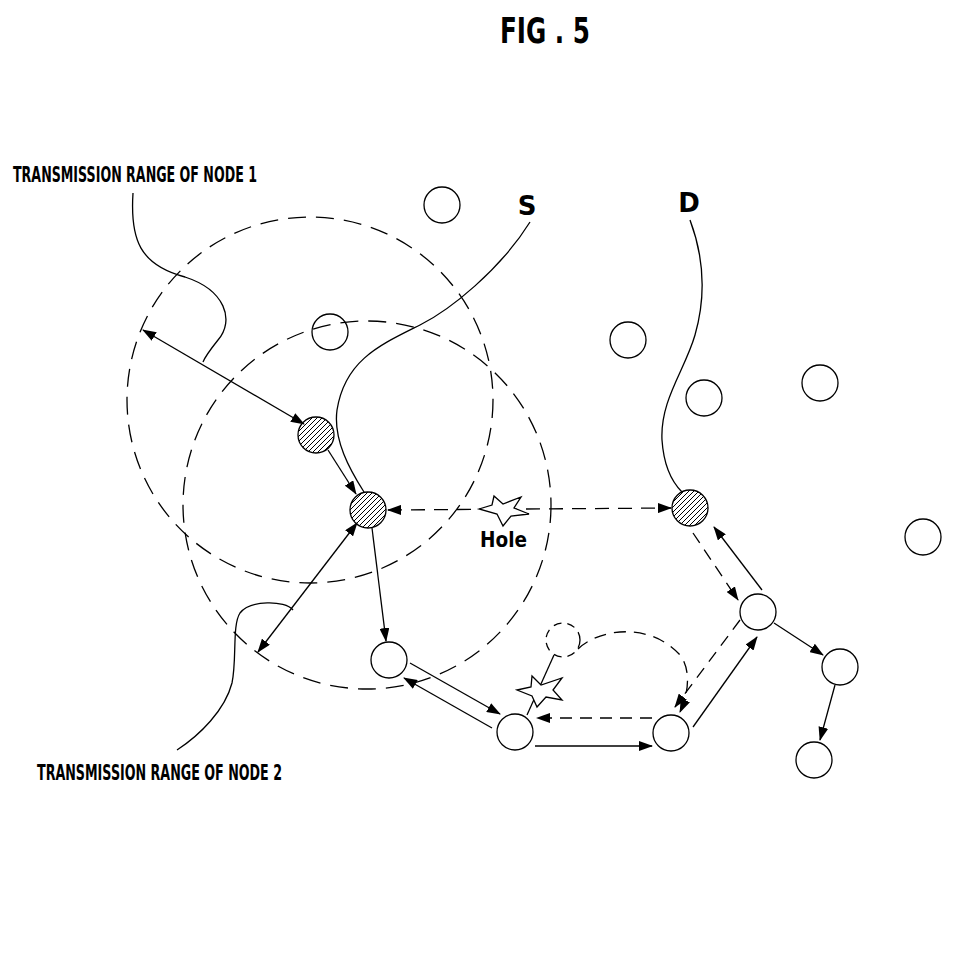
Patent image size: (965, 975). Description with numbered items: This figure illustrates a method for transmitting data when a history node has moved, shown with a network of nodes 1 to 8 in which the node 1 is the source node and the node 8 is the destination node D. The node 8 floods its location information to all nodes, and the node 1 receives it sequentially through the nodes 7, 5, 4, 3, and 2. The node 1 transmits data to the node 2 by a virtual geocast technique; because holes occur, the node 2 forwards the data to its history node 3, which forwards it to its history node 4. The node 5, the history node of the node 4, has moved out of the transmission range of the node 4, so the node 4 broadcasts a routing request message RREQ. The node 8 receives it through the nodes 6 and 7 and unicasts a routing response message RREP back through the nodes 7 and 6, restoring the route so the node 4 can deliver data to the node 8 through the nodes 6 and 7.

The node 1 is at (316, 417).
The node 2 is at (354, 517).
The node 3 is at (373, 672).
The node 4 is at (515, 752).
The node 5 is at (828, 777).
The node 6 is at (682, 748).
The node 7 is at (777, 598).
The node 8 is at (703, 495).